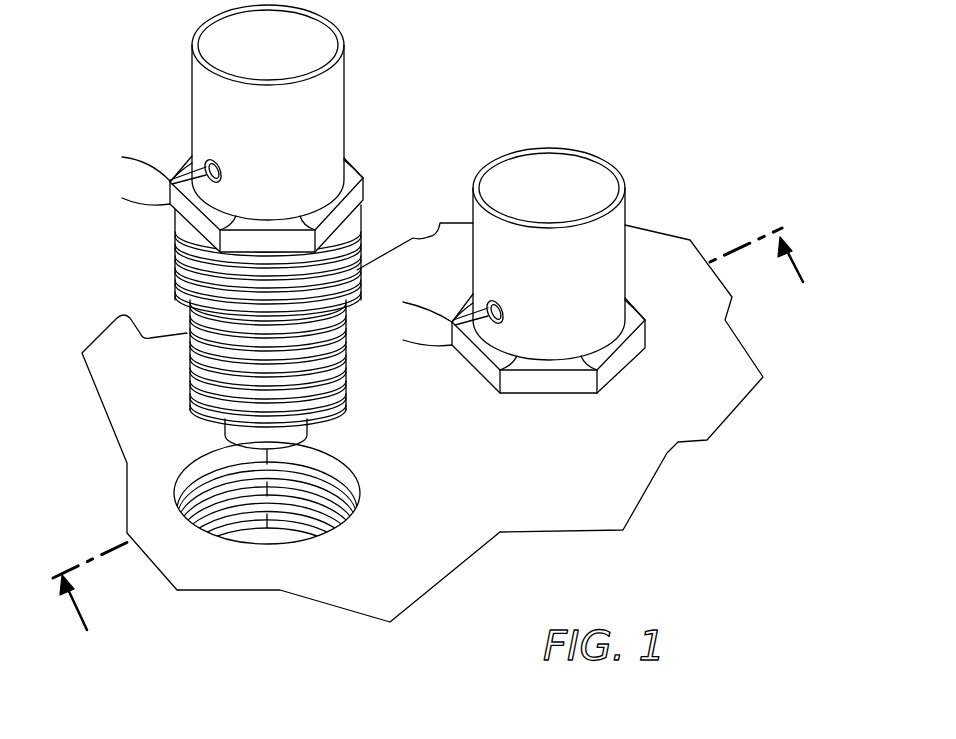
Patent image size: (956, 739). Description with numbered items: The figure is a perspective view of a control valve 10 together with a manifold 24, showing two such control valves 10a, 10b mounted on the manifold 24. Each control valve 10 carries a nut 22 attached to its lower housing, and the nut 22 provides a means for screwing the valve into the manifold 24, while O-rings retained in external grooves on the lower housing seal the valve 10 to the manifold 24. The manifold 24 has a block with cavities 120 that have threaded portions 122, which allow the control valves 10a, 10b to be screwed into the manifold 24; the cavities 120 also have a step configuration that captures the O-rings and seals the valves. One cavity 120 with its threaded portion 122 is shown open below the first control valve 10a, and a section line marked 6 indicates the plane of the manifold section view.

The control valve 10 is at (398, 75).
The control valve 10a is at (190, 153).
The control valve 10b is at (630, 233).
The nut 22 is at (357, 195).
The manifold 24 is at (493, 512).
The cavity 120 is at (293, 509).
The threaded portion 122 is at (330, 518).
The section line 6- 6 is at (439, 438).